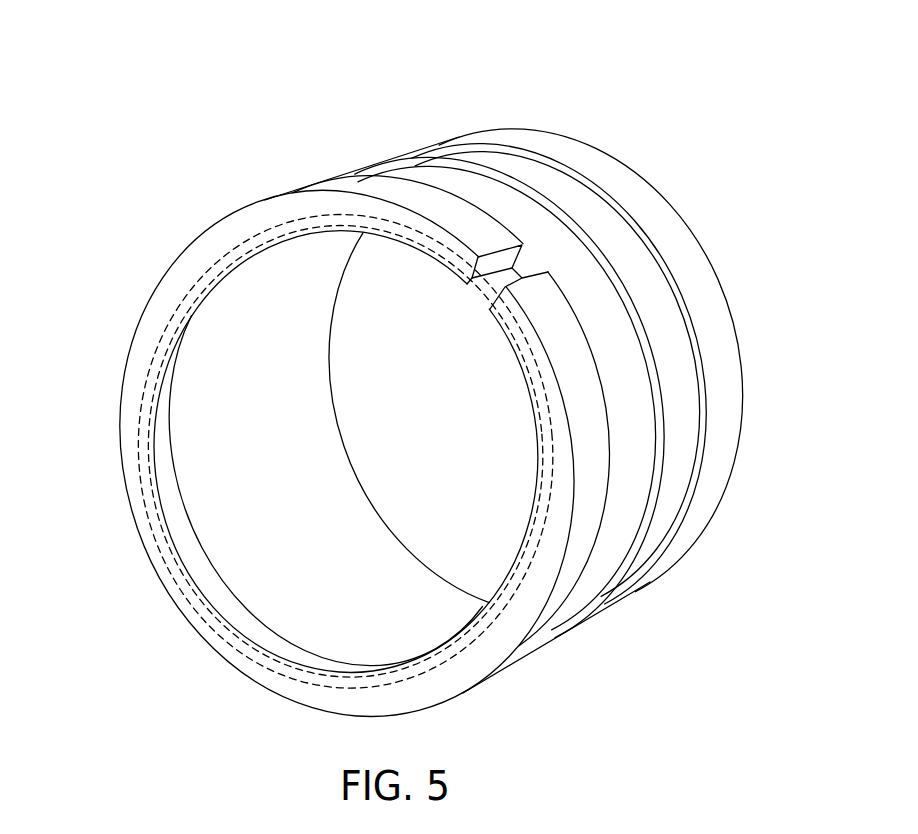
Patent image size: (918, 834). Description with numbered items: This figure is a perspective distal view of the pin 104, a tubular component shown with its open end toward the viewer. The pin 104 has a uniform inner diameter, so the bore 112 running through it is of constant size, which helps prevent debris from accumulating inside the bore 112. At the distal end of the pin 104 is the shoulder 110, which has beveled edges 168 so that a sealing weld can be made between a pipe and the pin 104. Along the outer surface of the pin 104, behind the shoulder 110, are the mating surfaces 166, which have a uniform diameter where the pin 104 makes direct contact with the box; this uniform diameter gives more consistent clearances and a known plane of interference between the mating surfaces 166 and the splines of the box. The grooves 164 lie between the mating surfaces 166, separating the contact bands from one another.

The pin 104 is at (386, 170).
The shoulder 110 is at (132, 425).
The bore 112 is at (198, 328).
The grooves 164 is at (610, 585).
The mating surfaces 166 is at (547, 150).
The beveled edges 168 is at (172, 357).